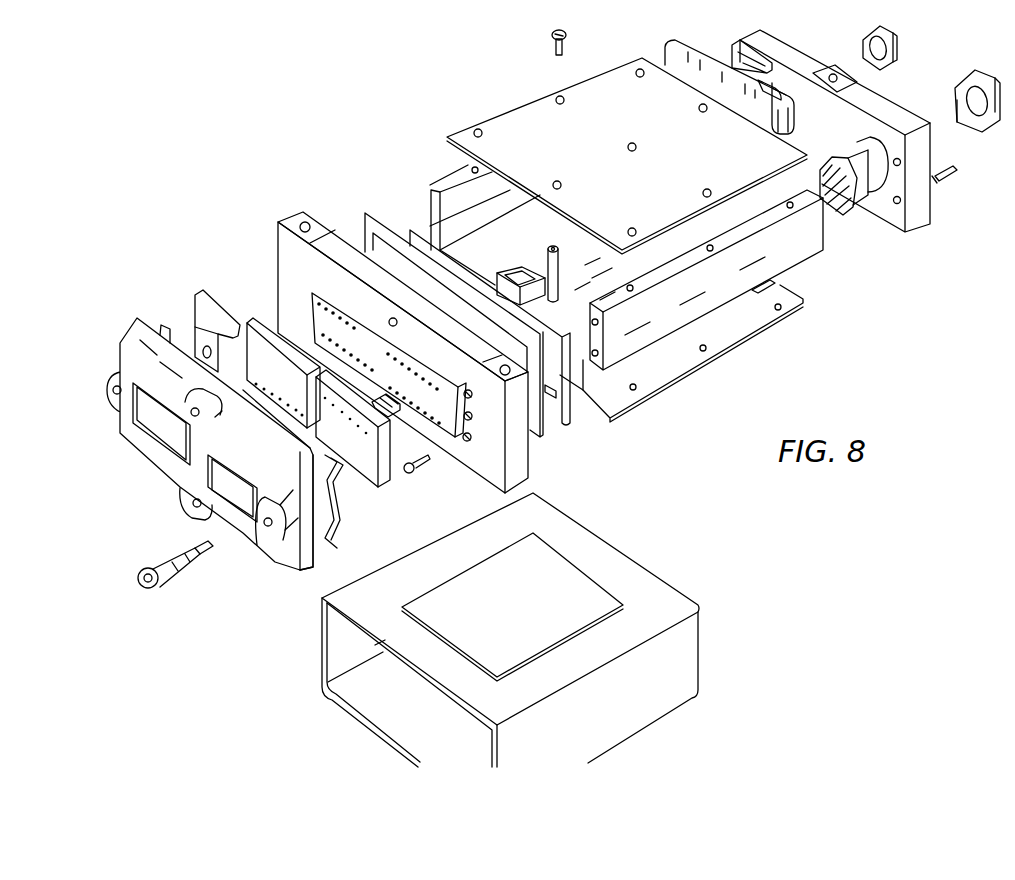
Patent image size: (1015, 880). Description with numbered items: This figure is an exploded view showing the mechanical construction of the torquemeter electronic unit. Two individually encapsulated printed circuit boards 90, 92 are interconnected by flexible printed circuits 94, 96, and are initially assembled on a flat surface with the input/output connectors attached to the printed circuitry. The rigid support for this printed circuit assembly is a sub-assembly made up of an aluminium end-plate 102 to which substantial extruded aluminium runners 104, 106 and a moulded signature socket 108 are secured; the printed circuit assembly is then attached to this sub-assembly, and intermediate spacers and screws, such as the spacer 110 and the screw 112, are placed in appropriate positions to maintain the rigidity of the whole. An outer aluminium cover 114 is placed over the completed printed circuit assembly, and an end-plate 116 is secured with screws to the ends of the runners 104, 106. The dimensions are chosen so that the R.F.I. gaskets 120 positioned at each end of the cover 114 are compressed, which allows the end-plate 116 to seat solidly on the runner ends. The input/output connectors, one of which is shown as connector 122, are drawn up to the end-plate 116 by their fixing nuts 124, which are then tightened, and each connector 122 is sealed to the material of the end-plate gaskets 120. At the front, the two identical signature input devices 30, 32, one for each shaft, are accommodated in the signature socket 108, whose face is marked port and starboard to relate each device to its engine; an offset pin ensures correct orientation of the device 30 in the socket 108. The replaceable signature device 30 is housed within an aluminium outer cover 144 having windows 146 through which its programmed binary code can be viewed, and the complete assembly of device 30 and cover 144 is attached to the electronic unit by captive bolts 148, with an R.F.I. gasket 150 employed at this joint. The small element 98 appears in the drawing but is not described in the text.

The signature input device 30 is at (370, 468).
The signature input device 32 is at (262, 320).
The printed circuit board 90 is at (517, 120).
The printed circuit board 92 is at (738, 325).
The flexible printed circuit 94 is at (696, 61).
The flexible printed circuit 96 is at (558, 400).
The spacer 98 is at (564, 382).
The aluminium end-plate 102 is at (527, 462).
The extruded aluminium runner 104 is at (643, 330).
The extruded aluminium runner 106 is at (431, 182).
The signature socket 108 is at (310, 310).
The intermediate spacer 110 is at (557, 253).
The screw 112 is at (556, 50).
The outer aluminium cover 114 is at (582, 543).
The end-plate 116 is at (880, 100).
The R.F.I. gasket 120 is at (765, 52).
The input/output connector 122 is at (867, 200).
The fixing nut 124 is at (972, 82).
The aluminium outer cover 144 is at (305, 570).
The window 146 is at (167, 432).
The captive bolt 148 is at (192, 566).
The R.F.I. gasket 150 is at (195, 312).